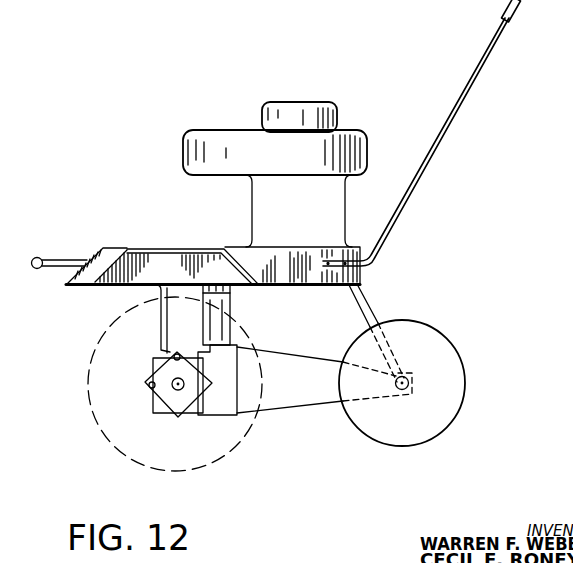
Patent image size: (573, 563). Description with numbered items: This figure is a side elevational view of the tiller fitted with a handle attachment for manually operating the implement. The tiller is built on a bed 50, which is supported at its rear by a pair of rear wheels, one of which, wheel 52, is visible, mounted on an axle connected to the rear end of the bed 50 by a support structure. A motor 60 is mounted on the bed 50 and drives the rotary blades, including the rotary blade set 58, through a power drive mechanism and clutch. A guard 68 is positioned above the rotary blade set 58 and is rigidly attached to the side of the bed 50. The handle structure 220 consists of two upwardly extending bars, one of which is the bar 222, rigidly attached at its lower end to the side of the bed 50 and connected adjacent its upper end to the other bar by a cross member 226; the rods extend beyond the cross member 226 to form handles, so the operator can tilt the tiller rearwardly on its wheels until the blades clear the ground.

The bed 50 is at (114, 249).
The rear wheel 52 is at (452, 405).
The rotary blade set 58 is at (116, 423).
The motor 60 is at (305, 211).
The guard 68 is at (207, 252).
The handle structure 220 is at (448, 133).
The upwardly extending bar 222 is at (449, 118).
The cross member 226 is at (521, 3).